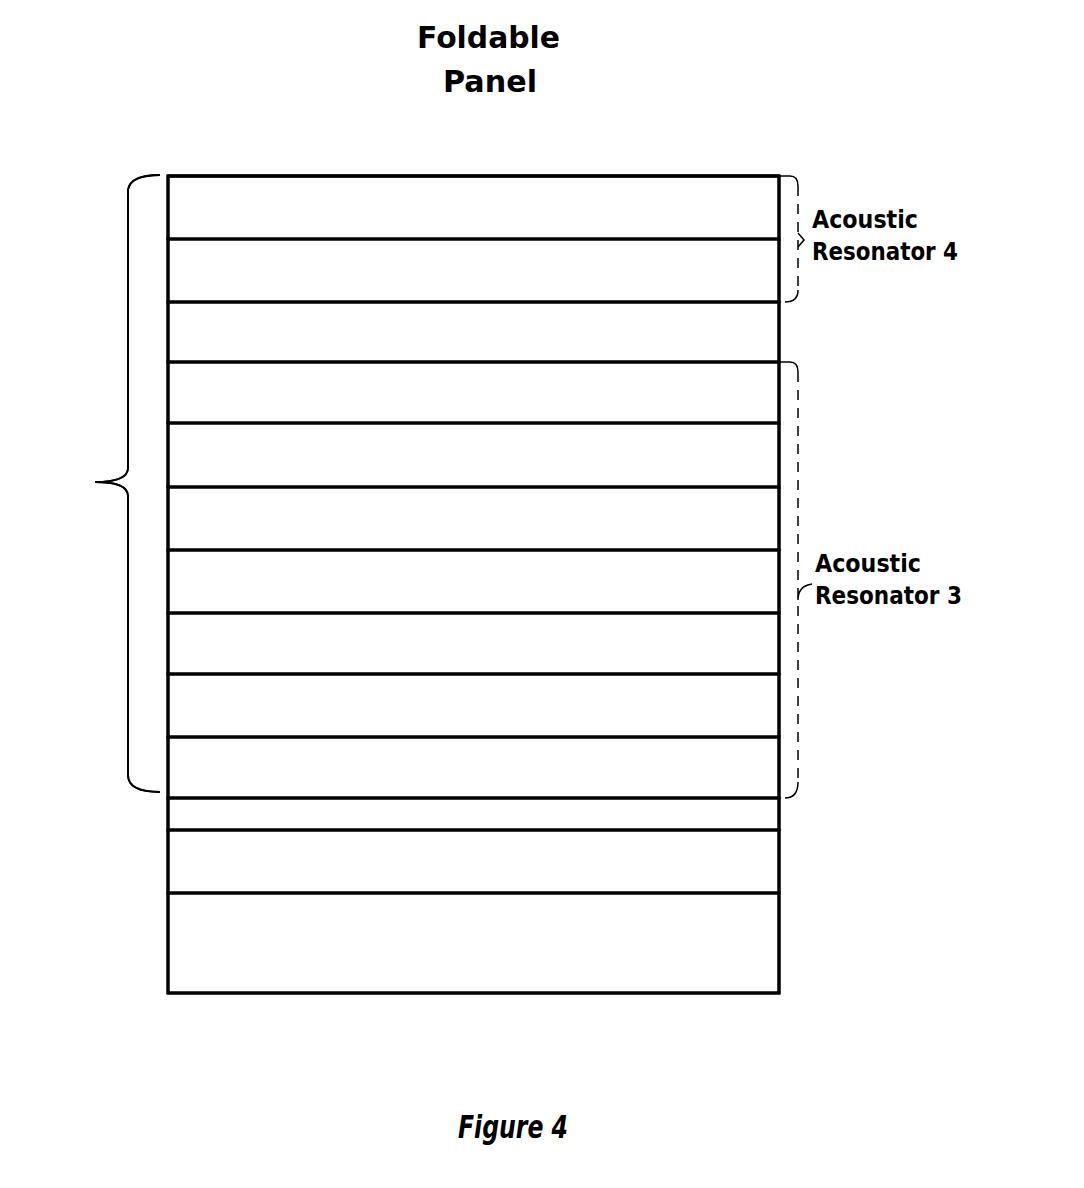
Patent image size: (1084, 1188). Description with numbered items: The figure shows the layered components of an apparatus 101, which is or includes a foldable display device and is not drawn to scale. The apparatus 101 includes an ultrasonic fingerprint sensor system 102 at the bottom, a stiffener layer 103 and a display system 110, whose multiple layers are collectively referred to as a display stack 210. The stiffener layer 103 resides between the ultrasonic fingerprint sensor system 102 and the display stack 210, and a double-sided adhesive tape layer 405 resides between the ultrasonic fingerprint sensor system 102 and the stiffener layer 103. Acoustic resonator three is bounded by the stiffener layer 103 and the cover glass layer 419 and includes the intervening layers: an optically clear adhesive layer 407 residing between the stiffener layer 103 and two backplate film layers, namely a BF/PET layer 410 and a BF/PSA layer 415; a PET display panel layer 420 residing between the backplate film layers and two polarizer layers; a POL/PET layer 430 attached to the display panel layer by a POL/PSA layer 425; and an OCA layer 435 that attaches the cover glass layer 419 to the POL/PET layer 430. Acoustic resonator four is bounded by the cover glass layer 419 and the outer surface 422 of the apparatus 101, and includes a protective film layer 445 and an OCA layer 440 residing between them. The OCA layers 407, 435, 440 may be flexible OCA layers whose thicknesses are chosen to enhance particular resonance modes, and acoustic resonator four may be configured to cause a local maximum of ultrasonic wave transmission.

The apparatus 101 is at (696, 158).
The ultrasonic fingerprint sensor system 102 is at (200, 943).
The stiffener layer 103 is at (195, 818).
The display system 110 is at (101, 483).
The display stack 210 is at (101, 483).
The double-sided adhesive tape (DST) layer 405 is at (767, 852).
The optically clear adhesive (OCA) layer 407 is at (772, 767).
The BF/PET layer 410 is at (765, 705).
The BF/PSA layer 415 is at (770, 648).
The cover glass layer 419 is at (782, 330).
The PNL/PET layer 420 is at (767, 572).
The outer surface 422 is at (268, 175).
The POL/PSA layer 425 is at (763, 510).
The POL/PET layer 430 is at (772, 450).
The OCA layer 435 is at (772, 397).
The OCA layer 440 is at (765, 277).
The protective film layer 445 is at (768, 198).